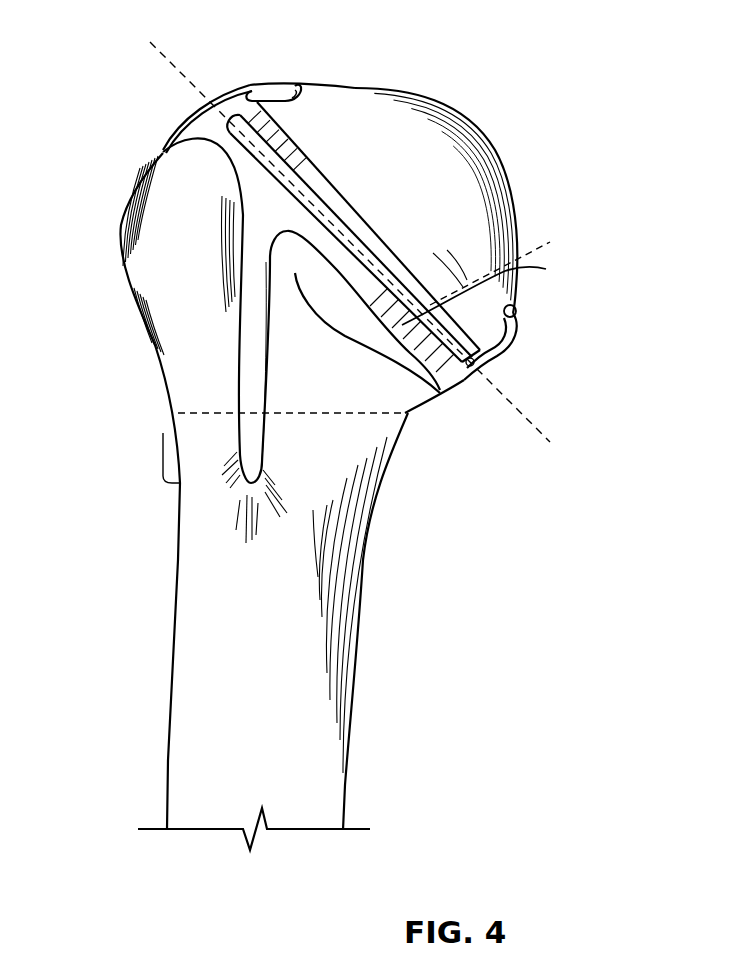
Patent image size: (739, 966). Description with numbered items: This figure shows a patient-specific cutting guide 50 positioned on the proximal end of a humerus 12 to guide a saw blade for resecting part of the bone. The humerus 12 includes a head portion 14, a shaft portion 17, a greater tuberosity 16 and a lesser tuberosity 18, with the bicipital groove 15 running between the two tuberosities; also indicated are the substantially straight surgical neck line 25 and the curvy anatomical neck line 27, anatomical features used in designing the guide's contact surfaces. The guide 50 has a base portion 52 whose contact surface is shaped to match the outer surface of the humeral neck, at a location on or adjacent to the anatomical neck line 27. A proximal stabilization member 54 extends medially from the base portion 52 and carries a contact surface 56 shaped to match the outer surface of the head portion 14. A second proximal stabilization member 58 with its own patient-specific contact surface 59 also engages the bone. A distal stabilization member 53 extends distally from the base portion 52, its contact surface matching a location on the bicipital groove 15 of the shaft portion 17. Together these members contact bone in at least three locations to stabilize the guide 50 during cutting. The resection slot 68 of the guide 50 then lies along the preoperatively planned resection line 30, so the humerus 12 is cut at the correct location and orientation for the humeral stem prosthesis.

The humerus 12 is at (393, 742).
The head portion 14 is at (383, 149).
The bicipital groove 15 is at (240, 262).
The greater tuberosity 16 is at (161, 233).
The shaft portion 17 is at (181, 706).
The lesser tuberosity 18 is at (437, 398).
The surgical neck line 25 is at (199, 413).
The anatomical neck line 27 is at (510, 265).
The resection line 30 is at (163, 46).
The patient-specific cutting guide 50 is at (289, 49).
The base portion 52 is at (188, 150).
The distal stabilization member 53 is at (248, 317).
The proximal stabilization member 54 is at (273, 80).
The contact surface 56 is at (304, 88).
The proximal stabilization member 58 is at (505, 337).
The patient-specific contact surface 59 is at (516, 311).
The resection slot 68 is at (492, 289).